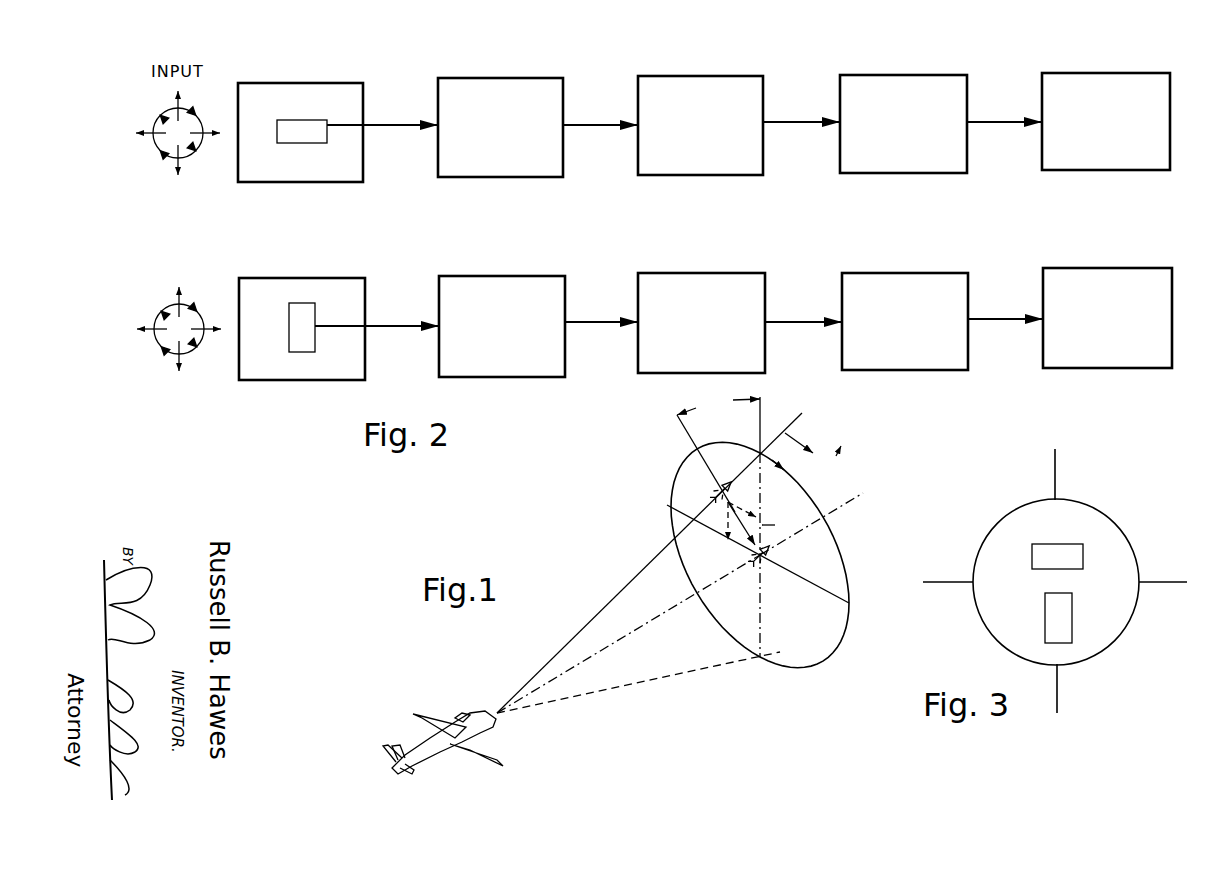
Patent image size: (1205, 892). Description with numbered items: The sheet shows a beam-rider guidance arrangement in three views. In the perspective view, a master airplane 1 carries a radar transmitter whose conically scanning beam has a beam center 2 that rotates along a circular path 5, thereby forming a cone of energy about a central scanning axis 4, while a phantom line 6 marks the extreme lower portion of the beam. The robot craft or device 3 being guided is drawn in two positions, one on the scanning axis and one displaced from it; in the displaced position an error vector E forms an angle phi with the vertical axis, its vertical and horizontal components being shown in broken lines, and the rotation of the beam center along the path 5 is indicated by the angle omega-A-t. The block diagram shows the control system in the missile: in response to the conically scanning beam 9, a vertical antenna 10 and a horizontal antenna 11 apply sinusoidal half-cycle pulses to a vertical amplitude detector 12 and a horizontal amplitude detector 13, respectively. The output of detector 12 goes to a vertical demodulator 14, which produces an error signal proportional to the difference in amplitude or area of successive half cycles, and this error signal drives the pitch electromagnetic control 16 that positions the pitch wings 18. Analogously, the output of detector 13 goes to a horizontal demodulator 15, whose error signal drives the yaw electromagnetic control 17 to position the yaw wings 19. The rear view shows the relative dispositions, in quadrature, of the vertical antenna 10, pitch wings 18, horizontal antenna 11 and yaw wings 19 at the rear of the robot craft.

In FIG. 1, the master airplane 1 is at (480, 732).
In FIG. 1, the central axis of the beam (beam center) 2 is at (620, 592).
In FIG. 1, the robot craft or device 3 is at (733, 490).
In FIG. 1, the central axis of the cone (scanning axis) 4 is at (622, 640).
In FIG. 1, the path of the beam center 5 is at (843, 553).
In FIG. 1, the phantom line 6 is at (658, 682).
In FIG. 2, the conically scanning beam 9 is at (185, 109).
In FIG. 2, the vertical antenna 10 is at (355, 95).
In FIG. 3, the vertical antenna 10 is at (1073, 558).
In FIG. 2, the horizontal antenna 11 is at (357, 291).
In FIG. 3, the horizontal antenna 11 is at (1067, 625).
In FIG. 2, the vertical amplitude detector 12 is at (555, 92).
In FIG. 2, the horizontal amplitude detector 13 is at (557, 287).
In FIG. 2, the vertical demodulator 14 is at (755, 88).
In FIG. 2, the horizontal demodulator 15 is at (757, 285).
In FIG. 2, the pitch electromagnetic control 16 is at (958, 87).
In FIG. 2, the yaw electromagnetic control 17 is at (959, 284).
In FIG. 2, the pitch wings 18 is at (1162, 85).
In FIG. 3, the pitch wings 18 is at (957, 583).
In FIG. 2, the yaw wings 19 is at (1163, 280).
In FIG. 3, the yaw wings 19 is at (1055, 461).